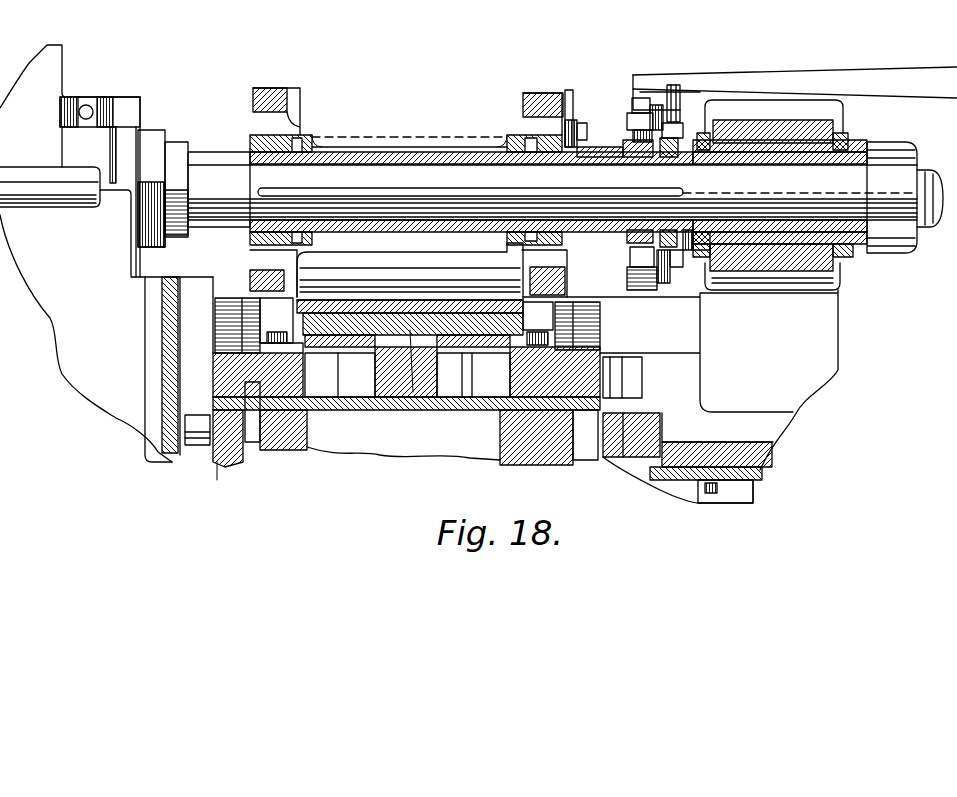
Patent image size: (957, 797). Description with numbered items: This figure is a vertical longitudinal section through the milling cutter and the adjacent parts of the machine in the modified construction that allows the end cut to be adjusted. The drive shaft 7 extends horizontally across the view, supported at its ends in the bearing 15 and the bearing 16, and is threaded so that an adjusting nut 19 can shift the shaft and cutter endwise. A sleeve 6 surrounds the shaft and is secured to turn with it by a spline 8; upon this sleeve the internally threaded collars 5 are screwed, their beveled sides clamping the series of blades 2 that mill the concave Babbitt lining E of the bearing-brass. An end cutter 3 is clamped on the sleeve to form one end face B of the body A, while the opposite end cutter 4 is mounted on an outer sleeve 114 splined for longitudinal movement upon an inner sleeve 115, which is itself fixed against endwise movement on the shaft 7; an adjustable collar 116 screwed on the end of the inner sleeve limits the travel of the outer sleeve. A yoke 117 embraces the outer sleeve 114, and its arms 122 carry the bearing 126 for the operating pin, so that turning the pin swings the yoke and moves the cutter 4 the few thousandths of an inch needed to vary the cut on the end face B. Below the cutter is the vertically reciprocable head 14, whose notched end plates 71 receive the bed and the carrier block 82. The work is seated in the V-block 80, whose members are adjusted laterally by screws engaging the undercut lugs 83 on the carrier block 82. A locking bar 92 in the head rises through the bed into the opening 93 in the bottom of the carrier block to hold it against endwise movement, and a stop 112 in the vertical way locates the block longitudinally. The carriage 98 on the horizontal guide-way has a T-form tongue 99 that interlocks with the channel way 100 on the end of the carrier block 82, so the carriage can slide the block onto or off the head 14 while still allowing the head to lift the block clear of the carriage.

The blades 2 is at (420, 146).
The end cutter 3 is at (288, 123).
The end cutter 4 is at (527, 124).
The collars 5 is at (314, 147).
The sleeve 6 is at (337, 154).
The drive shaft 7 is at (587, 183).
The spline 8 is at (475, 181).
The vertically reciprocable head 14 is at (287, 441).
The bearing 15 is at (107, 98).
The bearing 16 is at (780, 130).
The adjusting nut 19 is at (148, 145).
The end plates 71 is at (217, 462).
The V-block 80 is at (457, 346).
The carrier block 82 is at (308, 416).
The lug 83 is at (460, 378).
The locking bar 92 is at (250, 438).
The opening 93 is at (232, 387).
The carriage 98 is at (712, 453).
The tongue 99 is at (628, 444).
The channel way 100 is at (614, 378).
The stop 112 is at (170, 378).
The outer sleeve 114 is at (598, 147).
The inner sleeve 115 is at (590, 164).
The adjustable collar 116 is at (680, 150).
The yoke 117 is at (637, 127).
The arms 122 is at (688, 273).
The bearing 126 is at (865, 80).
The body A is at (416, 400).
The end faces B is at (293, 320).
The Babbitt lining E is at (427, 302).